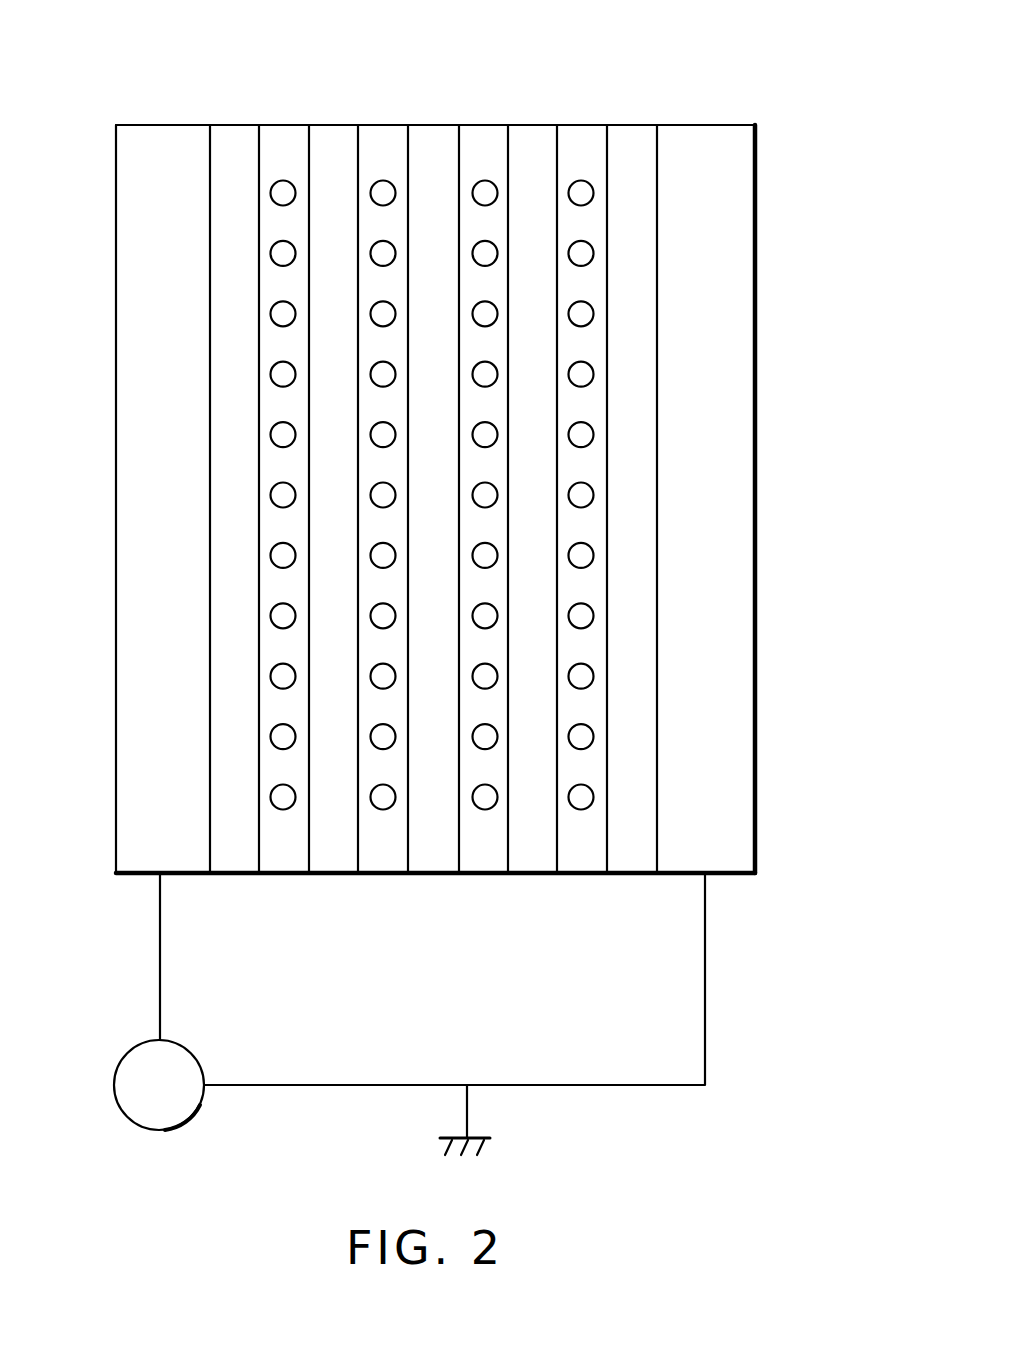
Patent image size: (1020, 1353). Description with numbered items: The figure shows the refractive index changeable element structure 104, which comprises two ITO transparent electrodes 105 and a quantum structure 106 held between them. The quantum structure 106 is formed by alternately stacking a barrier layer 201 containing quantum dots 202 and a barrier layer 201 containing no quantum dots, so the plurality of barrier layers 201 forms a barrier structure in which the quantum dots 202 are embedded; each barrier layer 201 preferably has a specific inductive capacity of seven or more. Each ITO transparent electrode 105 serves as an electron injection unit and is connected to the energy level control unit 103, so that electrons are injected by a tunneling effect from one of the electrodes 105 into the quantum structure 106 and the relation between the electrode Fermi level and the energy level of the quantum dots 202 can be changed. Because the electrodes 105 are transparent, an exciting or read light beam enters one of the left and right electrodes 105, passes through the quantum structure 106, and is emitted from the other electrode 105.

The energy level control unit 103 is at (157, 1132).
The refractive index changeable element structure 104 is at (578, 74).
The ITO transparent electrodes 105 is at (147, 359).
The quantum structure 106 is at (213, 103).
The barrier layers 201 is at (332, 850).
The quantum dots 202 is at (285, 800).